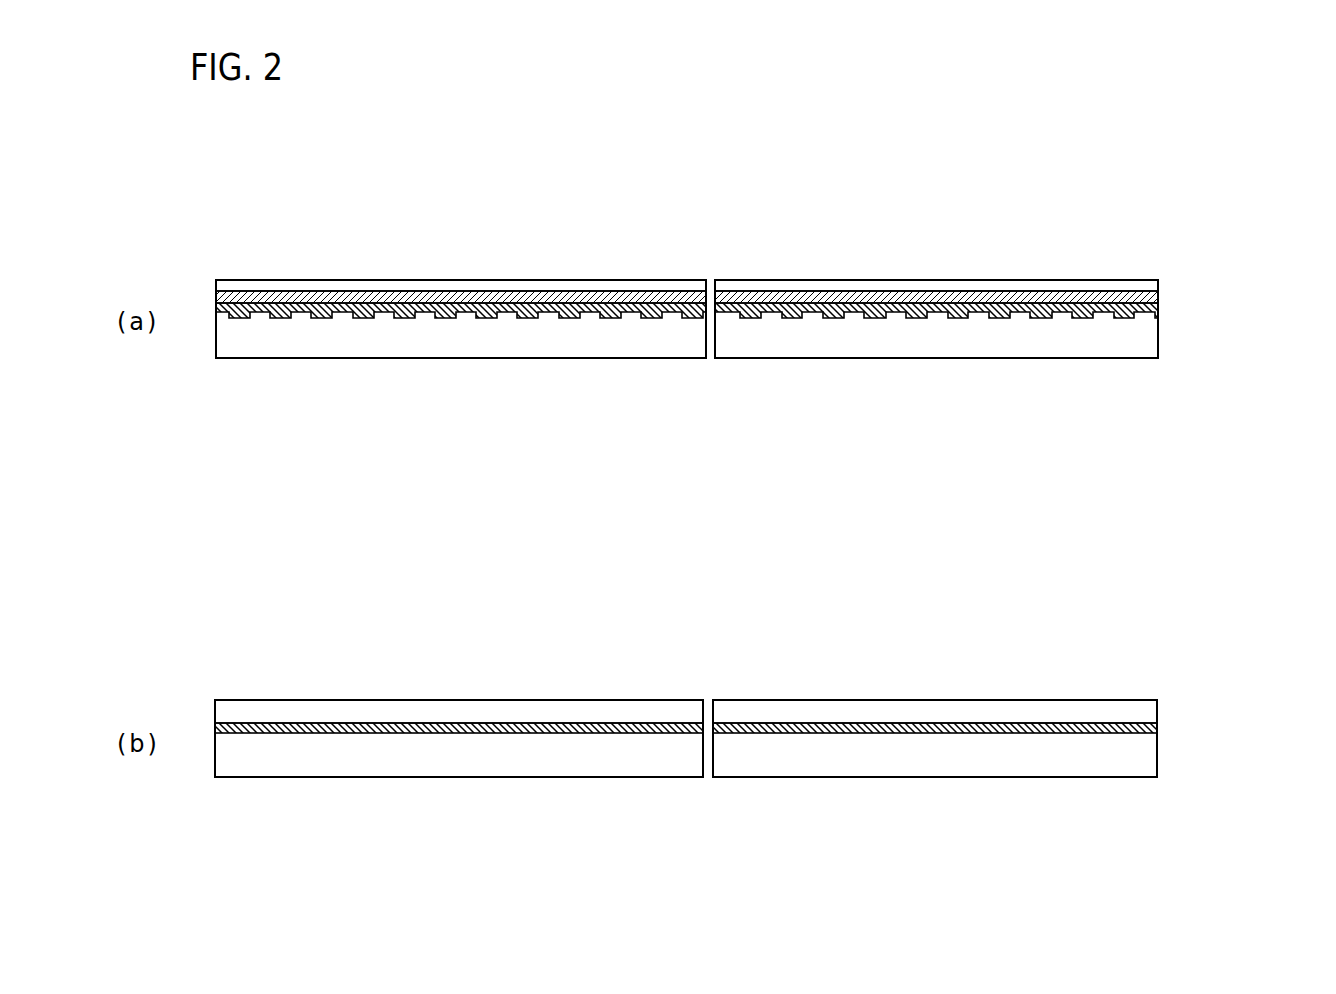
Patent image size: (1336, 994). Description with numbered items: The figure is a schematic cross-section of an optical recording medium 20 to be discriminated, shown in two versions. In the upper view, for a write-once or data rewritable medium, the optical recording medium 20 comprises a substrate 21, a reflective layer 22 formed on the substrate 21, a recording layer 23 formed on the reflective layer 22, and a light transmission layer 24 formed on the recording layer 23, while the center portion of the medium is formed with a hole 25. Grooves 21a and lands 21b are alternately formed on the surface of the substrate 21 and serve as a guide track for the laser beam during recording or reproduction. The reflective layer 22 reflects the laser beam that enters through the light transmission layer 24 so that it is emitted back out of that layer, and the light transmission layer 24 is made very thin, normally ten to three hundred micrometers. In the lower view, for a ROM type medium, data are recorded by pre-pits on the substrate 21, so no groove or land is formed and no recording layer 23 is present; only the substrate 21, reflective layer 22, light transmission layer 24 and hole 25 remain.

The optical recording medium 20 is at (1163, 195).
The substrate 21 is at (1113, 350).
The grooves 21a is at (388, 310).
The lands 21b is at (570, 308).
The reflective layer 22 is at (1155, 313).
The recording layer 23 is at (1158, 300).
The light transmission layer 24 is at (1158, 290).
The hole 25 is at (712, 364).